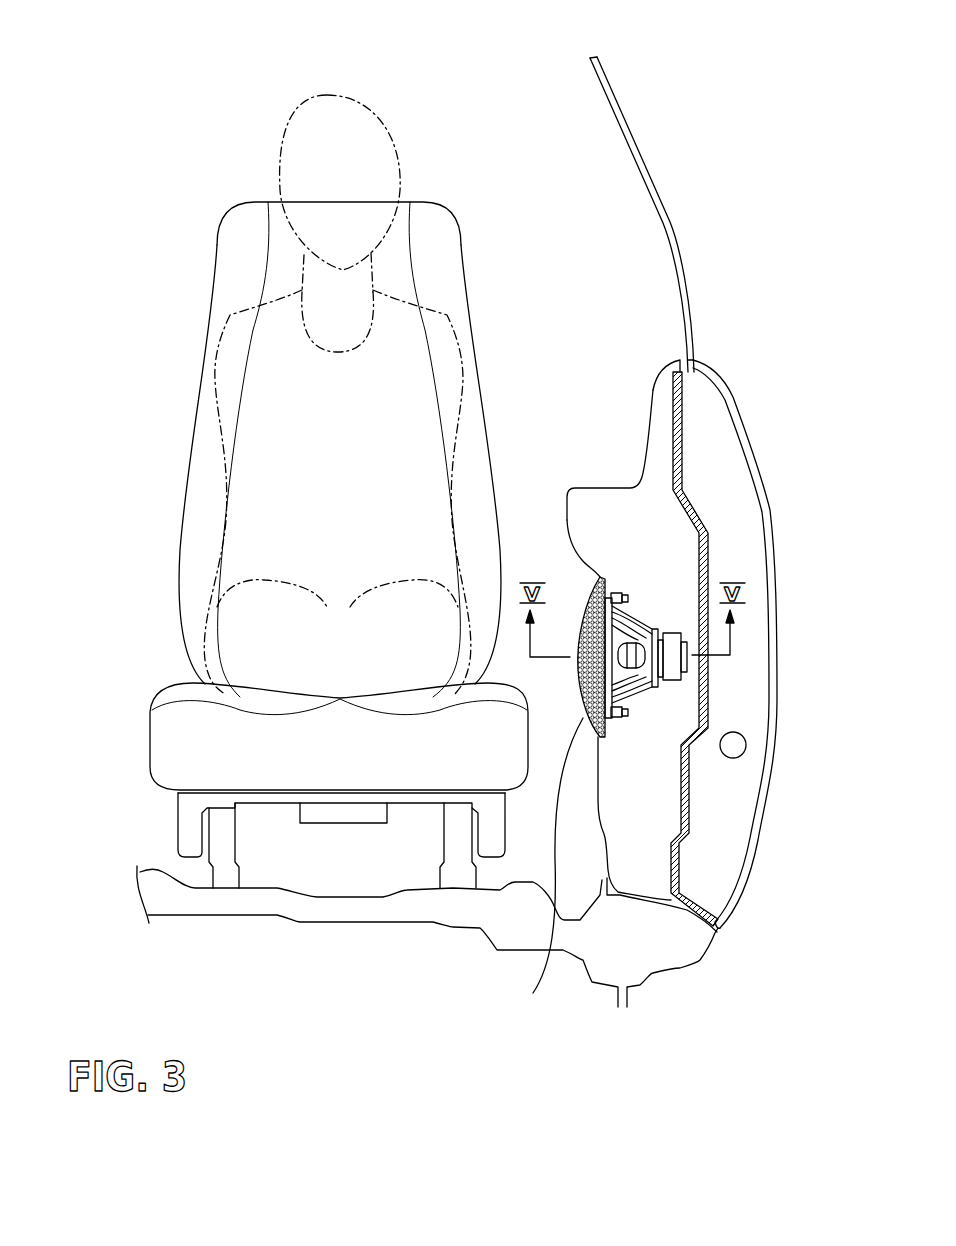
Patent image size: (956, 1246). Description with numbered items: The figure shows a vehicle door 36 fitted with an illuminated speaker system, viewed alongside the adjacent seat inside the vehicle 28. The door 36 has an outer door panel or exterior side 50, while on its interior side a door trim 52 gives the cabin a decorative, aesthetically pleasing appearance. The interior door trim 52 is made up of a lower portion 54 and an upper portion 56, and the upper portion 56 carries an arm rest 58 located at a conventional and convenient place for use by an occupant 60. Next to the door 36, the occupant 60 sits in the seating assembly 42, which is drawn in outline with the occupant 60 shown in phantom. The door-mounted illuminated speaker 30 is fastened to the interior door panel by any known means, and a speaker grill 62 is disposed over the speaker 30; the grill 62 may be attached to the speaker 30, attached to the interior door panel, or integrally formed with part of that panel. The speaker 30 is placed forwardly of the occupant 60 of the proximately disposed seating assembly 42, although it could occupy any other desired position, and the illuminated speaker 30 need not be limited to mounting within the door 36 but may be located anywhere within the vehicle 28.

The vehicle 28 is at (695, 199).
The illuminated speaker 30 is at (652, 695).
The door 36 is at (722, 356).
The seating assembly 42 is at (210, 308).
The outer door panel 50 is at (763, 478).
The door trim 52 is at (663, 373).
The lower portion 54 is at (605, 807).
The upper portion 56 is at (575, 523).
The arm rest 58 is at (607, 487).
The occupant 60 is at (277, 160).
The speaker grill 62 is at (427, 866).